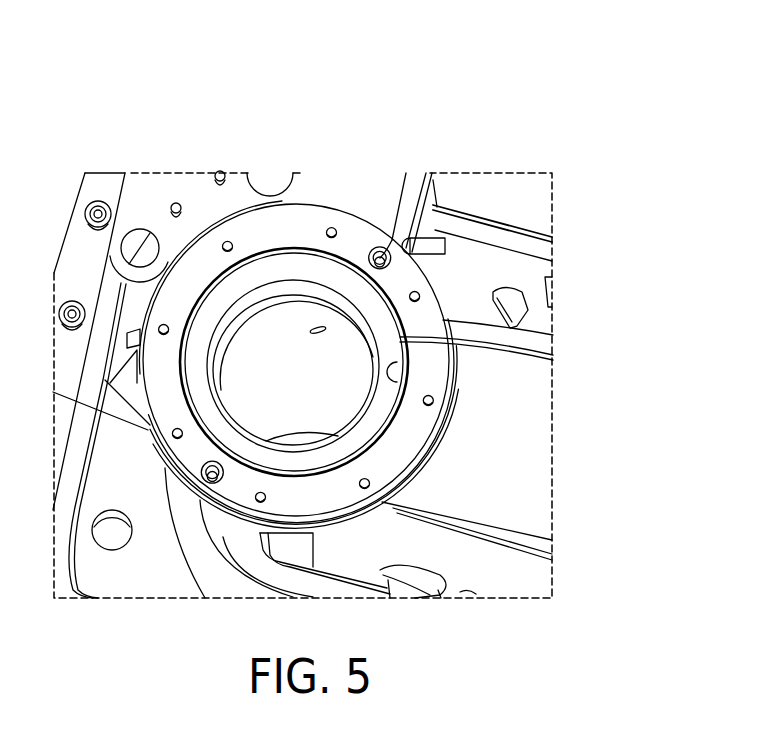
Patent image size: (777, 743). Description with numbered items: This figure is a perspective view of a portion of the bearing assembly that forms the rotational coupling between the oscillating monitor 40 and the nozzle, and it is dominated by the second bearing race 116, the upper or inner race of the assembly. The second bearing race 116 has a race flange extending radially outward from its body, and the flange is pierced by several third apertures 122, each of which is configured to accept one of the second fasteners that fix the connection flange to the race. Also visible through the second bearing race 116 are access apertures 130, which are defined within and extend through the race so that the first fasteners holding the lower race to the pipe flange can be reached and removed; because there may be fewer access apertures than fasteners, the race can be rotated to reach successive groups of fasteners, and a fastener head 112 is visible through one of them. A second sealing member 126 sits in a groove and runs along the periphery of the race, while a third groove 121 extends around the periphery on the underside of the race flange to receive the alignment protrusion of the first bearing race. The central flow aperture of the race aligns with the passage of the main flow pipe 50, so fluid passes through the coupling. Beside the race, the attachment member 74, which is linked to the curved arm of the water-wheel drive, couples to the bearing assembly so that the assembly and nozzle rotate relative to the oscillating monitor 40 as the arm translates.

The oscillating monitor 40 is at (566, 498).
The attachment member 74 is at (147, 190).
The head 112 is at (393, 243).
The second bearing race 116 is at (310, 225).
The third apertures 122 is at (331, 228).
The access apertures 130 is at (379, 246).
The second sealing member 126 is at (440, 326).
The main flow pipe 50 is at (344, 352).
The third groove 121 is at (395, 364).